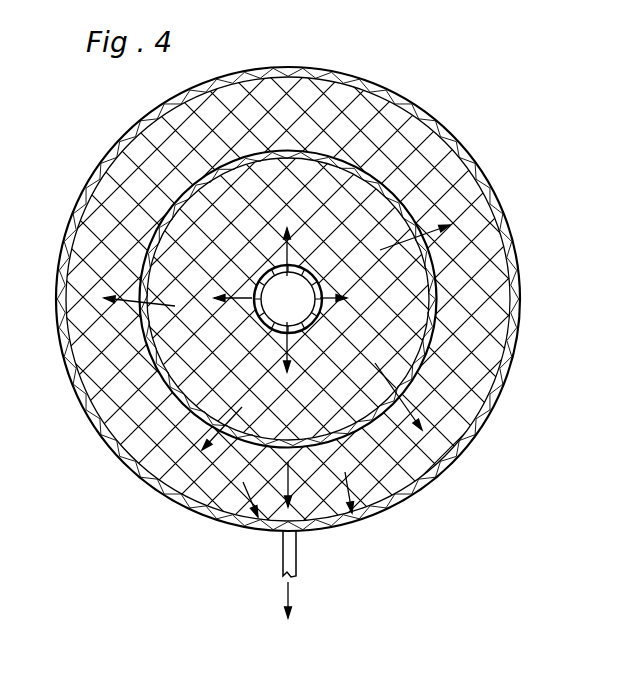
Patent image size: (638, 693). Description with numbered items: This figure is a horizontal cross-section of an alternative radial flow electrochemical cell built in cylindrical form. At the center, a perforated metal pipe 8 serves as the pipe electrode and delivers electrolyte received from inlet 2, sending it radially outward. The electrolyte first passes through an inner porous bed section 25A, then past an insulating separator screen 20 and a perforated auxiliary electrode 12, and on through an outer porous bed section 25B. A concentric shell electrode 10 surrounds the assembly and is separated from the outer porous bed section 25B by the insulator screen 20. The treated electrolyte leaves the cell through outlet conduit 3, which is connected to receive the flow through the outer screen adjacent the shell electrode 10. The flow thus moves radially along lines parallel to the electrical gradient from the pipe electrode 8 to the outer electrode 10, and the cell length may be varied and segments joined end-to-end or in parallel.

The inlet 2 is at (288, 299).
The outlet conduit 3 is at (298, 553).
The perforated metal pipe 8 is at (266, 275).
The concentric shell electrode 10 is at (487, 425).
The perforated auxiliary electrode 12 is at (166, 379).
The insulator screen 20 is at (335, 163).
The inner porous bed section 25A is at (361, 289).
The outer porous bed section 25B is at (425, 391).